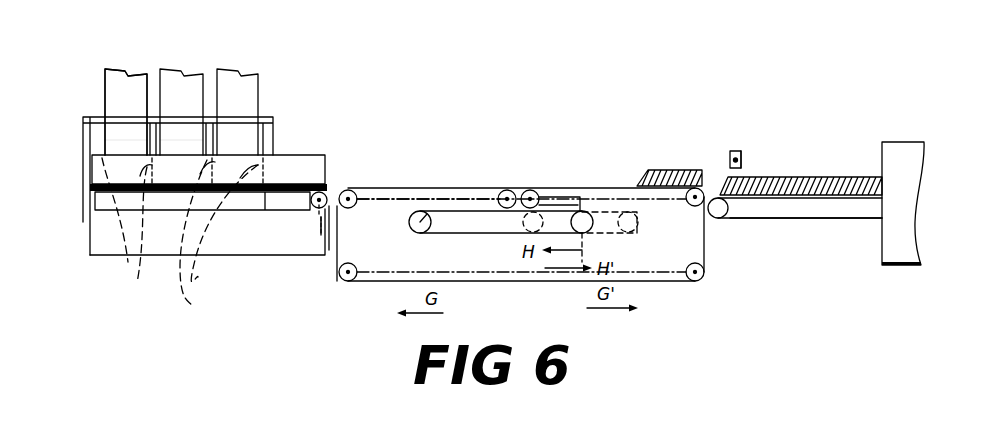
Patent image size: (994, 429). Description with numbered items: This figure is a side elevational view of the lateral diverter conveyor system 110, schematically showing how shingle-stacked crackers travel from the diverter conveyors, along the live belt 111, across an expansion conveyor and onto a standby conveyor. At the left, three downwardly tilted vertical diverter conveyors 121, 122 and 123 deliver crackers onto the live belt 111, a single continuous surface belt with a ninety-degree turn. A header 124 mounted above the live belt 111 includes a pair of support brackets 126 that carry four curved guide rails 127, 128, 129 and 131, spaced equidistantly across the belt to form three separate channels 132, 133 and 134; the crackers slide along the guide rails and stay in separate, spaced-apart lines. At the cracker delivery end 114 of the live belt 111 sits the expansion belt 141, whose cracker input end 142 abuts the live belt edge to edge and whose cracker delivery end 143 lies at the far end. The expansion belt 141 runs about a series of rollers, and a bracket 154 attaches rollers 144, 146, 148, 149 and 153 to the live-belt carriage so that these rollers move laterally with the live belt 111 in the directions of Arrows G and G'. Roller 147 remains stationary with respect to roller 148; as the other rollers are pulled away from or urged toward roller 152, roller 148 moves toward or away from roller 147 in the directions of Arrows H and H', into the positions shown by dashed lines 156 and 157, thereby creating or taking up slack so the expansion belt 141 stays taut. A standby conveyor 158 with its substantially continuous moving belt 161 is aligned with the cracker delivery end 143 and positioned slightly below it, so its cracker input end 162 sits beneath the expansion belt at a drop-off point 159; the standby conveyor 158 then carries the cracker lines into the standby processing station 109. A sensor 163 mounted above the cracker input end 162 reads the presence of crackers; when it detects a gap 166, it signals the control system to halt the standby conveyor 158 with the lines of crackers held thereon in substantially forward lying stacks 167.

The standby processing station 109 is at (890, 250).
The lateral diverter conveyor system 110 is at (222, 381).
The live belt 111 is at (291, 221).
The cracker delivery end 114 is at (327, 195).
The downwardly tilted vertical diverter conveyor 121 is at (236, 54).
The downwardly tilted vertical diverter conveyor 122 is at (181, 54).
The downwardly tilted vertical diverter conveyor 123 is at (123, 58).
The header 124 is at (303, 60).
The support brackets 126 is at (275, 141).
The guide rail 127 is at (224, 227).
The guide rail 128 is at (204, 241).
The guide rail 129 is at (152, 233).
The guide rail 131 is at (128, 261).
The channel 132 is at (246, 146).
The channel 133 is at (179, 142).
The channel 134 is at (122, 142).
The expansion belt 141 is at (670, 283).
The cracker input end 142 is at (354, 192).
The cracker delivery end 143 is at (710, 178).
The roller 144 is at (358, 203).
The roller 146 is at (503, 190).
The roller 147 is at (427, 217).
The roller 148 is at (582, 211).
The roller 149 is at (530, 190).
The roller 152 is at (693, 265).
The roller 153 is at (338, 281).
The bracket 154 is at (329, 262).
The dashed-line position 156 is at (640, 220).
The dashed-line position 157 is at (573, 170).
The standby conveyor 158 is at (770, 211).
The drop-off point 159 is at (739, 151).
The moving belt 161 is at (828, 219).
The cracker input end 162 is at (748, 175).
The sensor 163 is at (742, 158).
The gap 166 is at (716, 177).
The forward lying stacks 167 is at (833, 160).